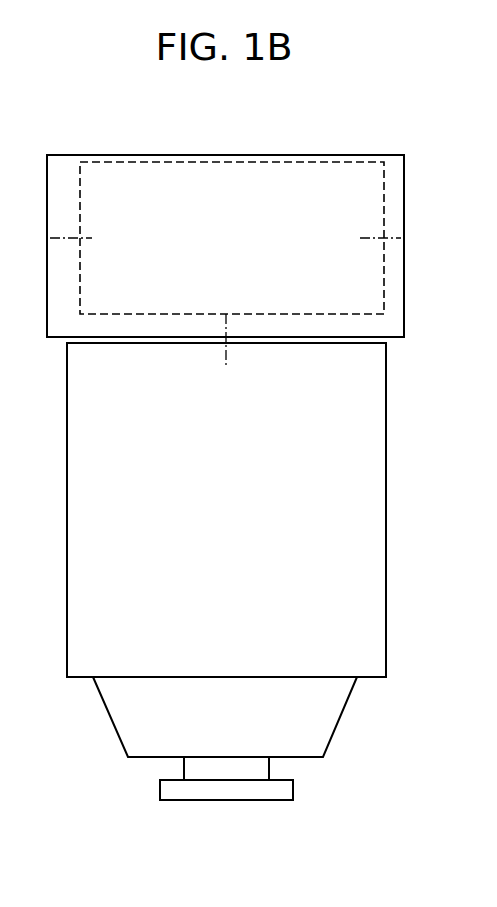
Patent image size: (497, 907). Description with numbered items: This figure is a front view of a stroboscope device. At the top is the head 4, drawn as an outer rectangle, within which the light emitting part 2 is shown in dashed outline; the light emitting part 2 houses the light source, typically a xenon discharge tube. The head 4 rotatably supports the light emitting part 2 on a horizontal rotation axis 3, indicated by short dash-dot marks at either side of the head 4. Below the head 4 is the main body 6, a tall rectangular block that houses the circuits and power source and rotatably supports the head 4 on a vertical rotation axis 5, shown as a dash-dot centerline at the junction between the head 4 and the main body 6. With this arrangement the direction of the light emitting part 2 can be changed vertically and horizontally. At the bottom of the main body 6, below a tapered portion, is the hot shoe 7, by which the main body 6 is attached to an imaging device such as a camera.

The light emitting part 2 is at (211, 162).
The horizontal rotation axis 3 is at (65, 237).
The head 4 is at (404, 283).
The vertical rotation axis 5 is at (228, 357).
The main body 6 is at (386, 526).
The hot shoe 7 is at (228, 801).